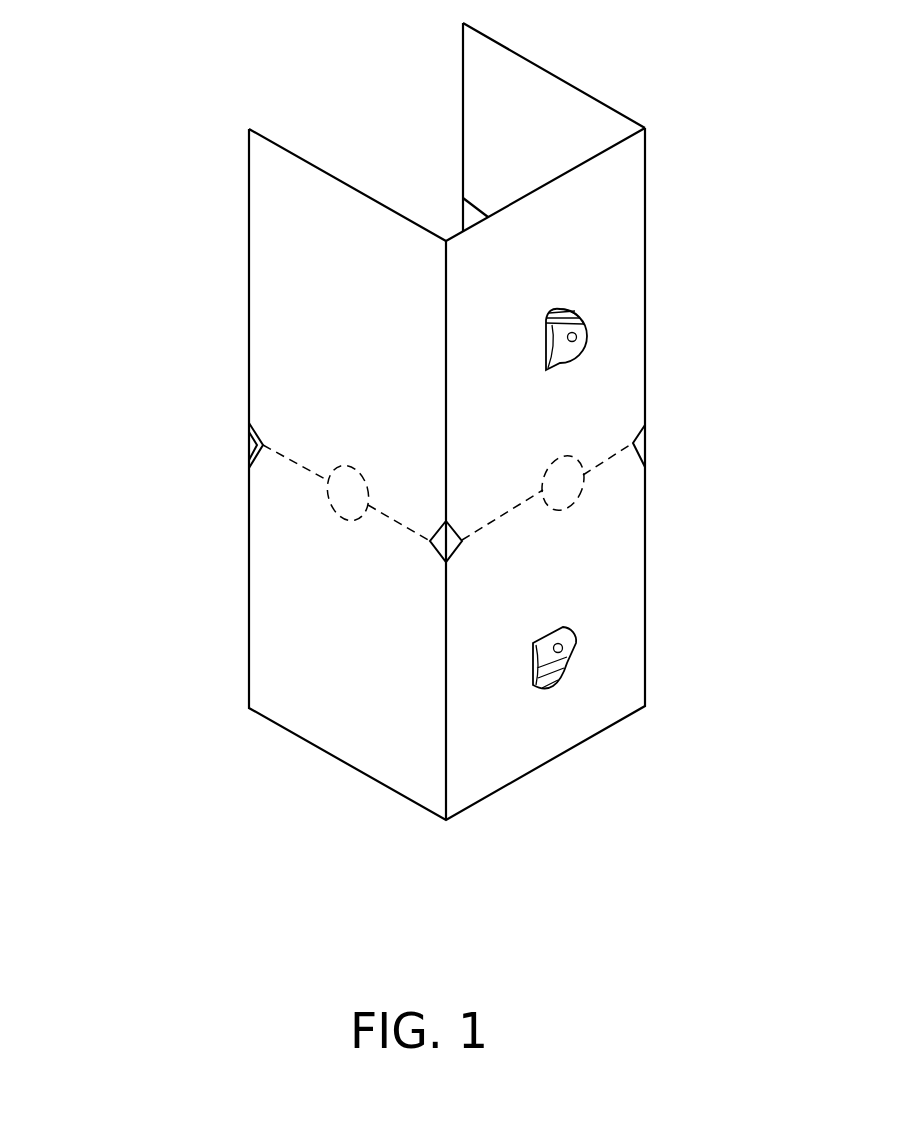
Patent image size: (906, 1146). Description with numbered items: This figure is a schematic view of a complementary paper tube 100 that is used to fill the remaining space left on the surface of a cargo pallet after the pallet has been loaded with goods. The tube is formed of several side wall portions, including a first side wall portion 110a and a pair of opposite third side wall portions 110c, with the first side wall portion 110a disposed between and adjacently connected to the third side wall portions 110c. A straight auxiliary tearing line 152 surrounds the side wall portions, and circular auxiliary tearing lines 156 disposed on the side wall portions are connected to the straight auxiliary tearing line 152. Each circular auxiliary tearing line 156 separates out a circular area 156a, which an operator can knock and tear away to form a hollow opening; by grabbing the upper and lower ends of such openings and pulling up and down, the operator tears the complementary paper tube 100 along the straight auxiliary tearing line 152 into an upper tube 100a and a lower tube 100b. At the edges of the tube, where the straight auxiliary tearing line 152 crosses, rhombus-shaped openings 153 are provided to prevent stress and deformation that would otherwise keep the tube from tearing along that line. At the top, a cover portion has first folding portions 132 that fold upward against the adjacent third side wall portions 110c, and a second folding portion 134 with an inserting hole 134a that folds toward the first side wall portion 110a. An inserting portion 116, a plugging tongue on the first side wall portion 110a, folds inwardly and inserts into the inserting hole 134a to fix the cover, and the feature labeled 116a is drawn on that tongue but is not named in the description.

The complementary paper tube 100 is at (675, 163).
The upper tube 100a is at (225, 317).
The lower tube 100b is at (238, 601).
The first side wall portion 110a is at (627, 228).
The third side wall portion 110c is at (538, 88).
The inserting portion 116 is at (565, 353).
The bracket hole 116a is at (576, 337).
The first folding portion 132 is at (472, 215).
The second folding portion 134 is at (575, 310).
The inserting hole 134a is at (580, 313).
The straight auxiliary tearing line 152 is at (608, 460).
The rhombus-shaped opening 153 is at (640, 438).
The circular auxiliary tearing line 156 is at (567, 505).
The circular area 156a is at (345, 488).